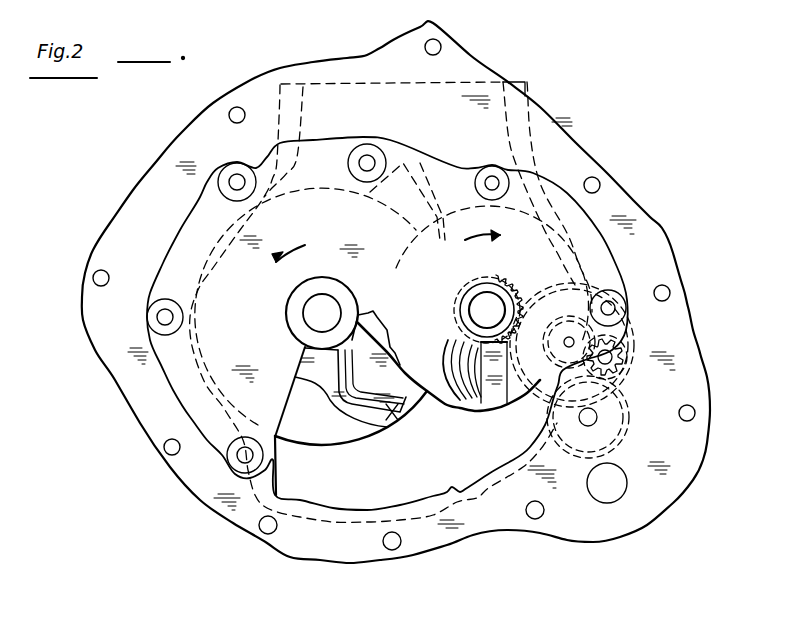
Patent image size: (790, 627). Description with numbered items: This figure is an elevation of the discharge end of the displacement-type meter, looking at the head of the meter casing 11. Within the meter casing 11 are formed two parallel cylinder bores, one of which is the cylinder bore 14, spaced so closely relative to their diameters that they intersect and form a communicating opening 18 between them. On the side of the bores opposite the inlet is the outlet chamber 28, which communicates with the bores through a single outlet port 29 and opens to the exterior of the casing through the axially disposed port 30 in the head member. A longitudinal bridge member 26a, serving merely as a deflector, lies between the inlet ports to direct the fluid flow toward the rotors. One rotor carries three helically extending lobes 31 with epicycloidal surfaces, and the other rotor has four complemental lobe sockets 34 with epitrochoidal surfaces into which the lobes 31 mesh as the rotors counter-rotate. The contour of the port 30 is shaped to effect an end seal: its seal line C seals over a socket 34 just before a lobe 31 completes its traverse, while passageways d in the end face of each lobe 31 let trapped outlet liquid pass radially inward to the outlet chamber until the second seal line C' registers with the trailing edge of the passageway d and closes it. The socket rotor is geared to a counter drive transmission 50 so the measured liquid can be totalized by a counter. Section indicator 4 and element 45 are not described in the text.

The meter casing 11 is at (438, 497).
The cylinder bore 14 is at (322, 444).
The communicating opening 18 is at (443, 403).
The longitudinal bridge member 26a is at (437, 147).
The outlet chamber 28 is at (375, 500).
The outlet port 29 is at (367, 440).
The port 30 is at (278, 474).
The lobe 31 is at (324, 412).
The lobe socket 34 is at (465, 412).
The second rotor 45 is at (490, 408).
The counter drive transmission 50 is at (545, 287).
The section line 4- 4 is at (50, 310).
The seal line C is at (420, 357).
The seal line C' is at (375, 292).
The passageway d is at (350, 372).